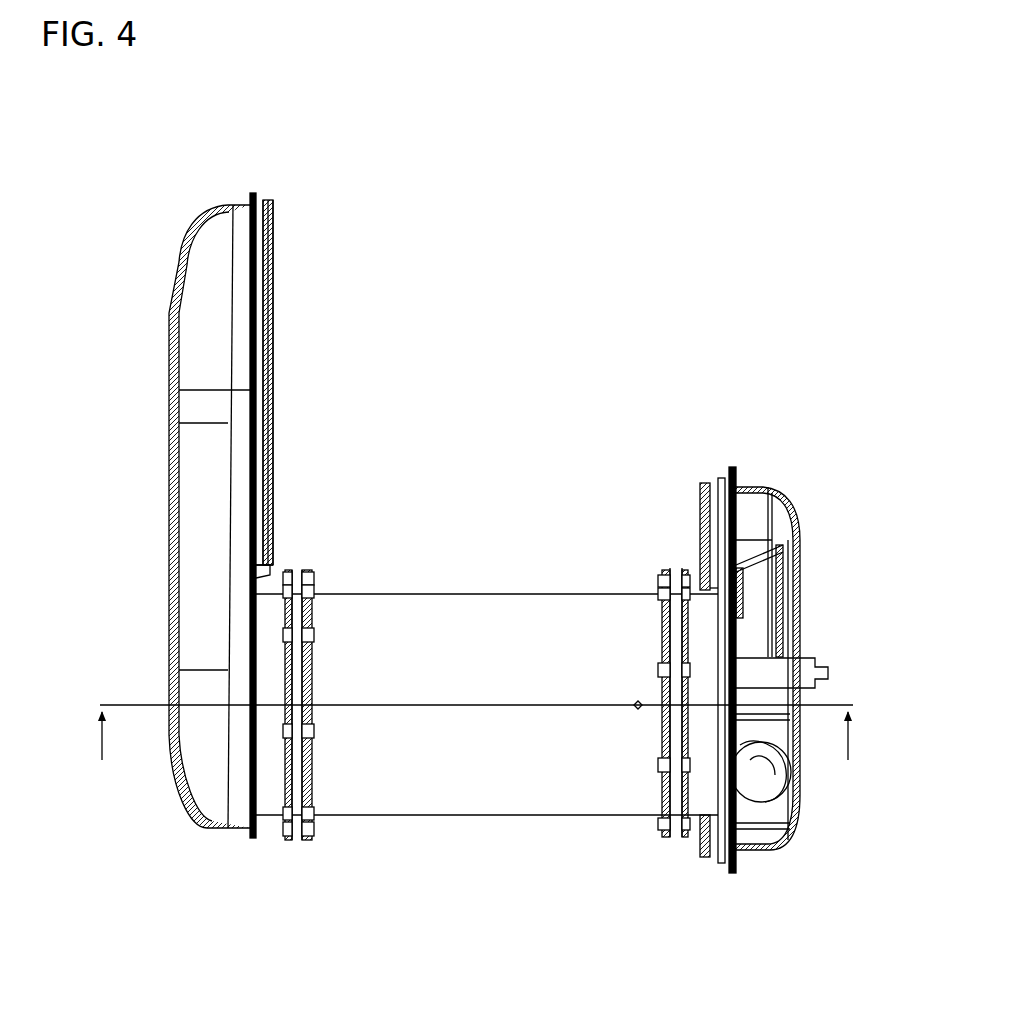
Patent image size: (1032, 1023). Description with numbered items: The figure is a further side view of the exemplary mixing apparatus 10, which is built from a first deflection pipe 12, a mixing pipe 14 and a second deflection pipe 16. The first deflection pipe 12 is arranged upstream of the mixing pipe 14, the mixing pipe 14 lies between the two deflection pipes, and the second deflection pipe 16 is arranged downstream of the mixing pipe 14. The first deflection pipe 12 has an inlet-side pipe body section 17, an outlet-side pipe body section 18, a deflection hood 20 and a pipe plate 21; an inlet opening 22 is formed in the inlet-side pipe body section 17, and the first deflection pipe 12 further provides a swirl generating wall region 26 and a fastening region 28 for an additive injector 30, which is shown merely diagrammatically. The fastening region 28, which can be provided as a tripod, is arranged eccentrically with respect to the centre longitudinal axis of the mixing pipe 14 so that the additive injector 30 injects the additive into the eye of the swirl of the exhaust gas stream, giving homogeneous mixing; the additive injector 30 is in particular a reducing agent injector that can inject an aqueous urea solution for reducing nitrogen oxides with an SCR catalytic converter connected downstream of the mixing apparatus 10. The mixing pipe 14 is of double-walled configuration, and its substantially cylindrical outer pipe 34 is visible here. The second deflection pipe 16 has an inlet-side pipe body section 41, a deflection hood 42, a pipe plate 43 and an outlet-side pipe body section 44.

The mixing apparatus 10 is at (500, 101).
The first deflection pipe 12 is at (822, 434).
The mixing pipe 14 is at (487, 566).
The second deflection pipe 16 is at (356, 252).
The inlet-side pipe body section 17 is at (700, 548).
The outlet-side pipe body section 18 is at (705, 797).
The deflection hood 20 is at (783, 525).
The pipe plate 21 is at (718, 655).
The inlet opening 22 is at (697, 525).
The swirl generating wall region 26 is at (772, 757).
The fastening region 28 is at (751, 644).
The additive injector 30 is at (816, 661).
The outer pipe 34 is at (455, 795).
The inlet-side pipe body section 41 is at (265, 790).
The deflection hood 42 is at (193, 272).
The pipe plate 43 is at (262, 578).
The outlet-side pipe body section 44 is at (260, 205).